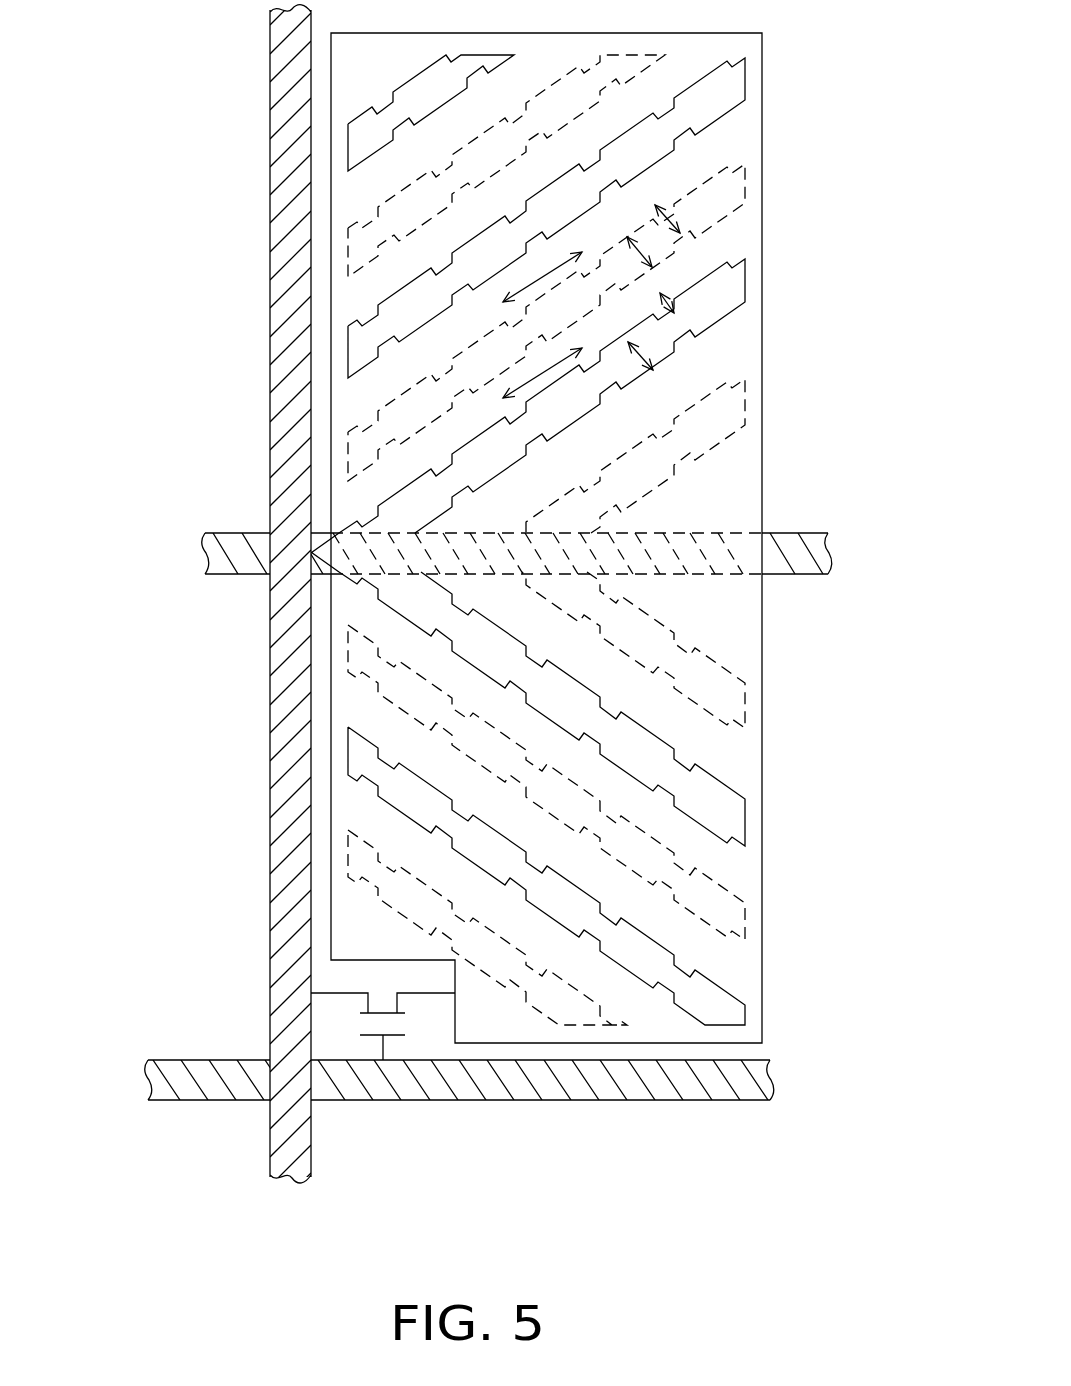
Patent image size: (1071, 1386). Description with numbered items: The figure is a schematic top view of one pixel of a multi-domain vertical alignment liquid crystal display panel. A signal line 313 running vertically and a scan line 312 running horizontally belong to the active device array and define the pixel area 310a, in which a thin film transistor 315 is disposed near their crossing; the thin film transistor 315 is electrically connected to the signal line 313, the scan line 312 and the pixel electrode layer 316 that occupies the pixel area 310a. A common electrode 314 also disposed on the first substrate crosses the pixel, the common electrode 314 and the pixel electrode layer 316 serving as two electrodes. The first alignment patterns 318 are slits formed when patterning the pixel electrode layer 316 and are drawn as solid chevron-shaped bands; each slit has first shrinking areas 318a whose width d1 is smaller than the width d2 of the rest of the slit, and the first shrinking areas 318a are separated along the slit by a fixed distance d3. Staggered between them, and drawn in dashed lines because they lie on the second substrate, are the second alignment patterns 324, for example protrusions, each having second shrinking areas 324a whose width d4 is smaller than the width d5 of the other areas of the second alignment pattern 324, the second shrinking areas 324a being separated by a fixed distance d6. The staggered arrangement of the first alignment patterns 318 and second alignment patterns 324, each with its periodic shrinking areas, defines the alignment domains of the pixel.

The pixel area 310a is at (782, 942).
The scan line 312 is at (158, 1080).
The signal line 313 is at (291, 1153).
The common electrode 314 is at (810, 548).
The thin film transistor 315 is at (338, 1035).
The pixel electrode layer 316 is at (722, 618).
The first alignment pattern 318 is at (591, 540).
The first shrinking area 318a is at (665, 310).
The second alignment pattern 324 is at (607, 540).
The second shrinking area 324a is at (663, 207).
The width of the first shrinking area d1 is at (683, 309).
The width of the first alignment pattern d2 is at (630, 362).
The fixed distance between first shrinking areas d3 is at (582, 347).
The width of the second shrinking area d4 is at (680, 213).
The width of the second alignment pattern d5 is at (629, 260).
The fixed distance between second shrinking areas d6 is at (582, 247).